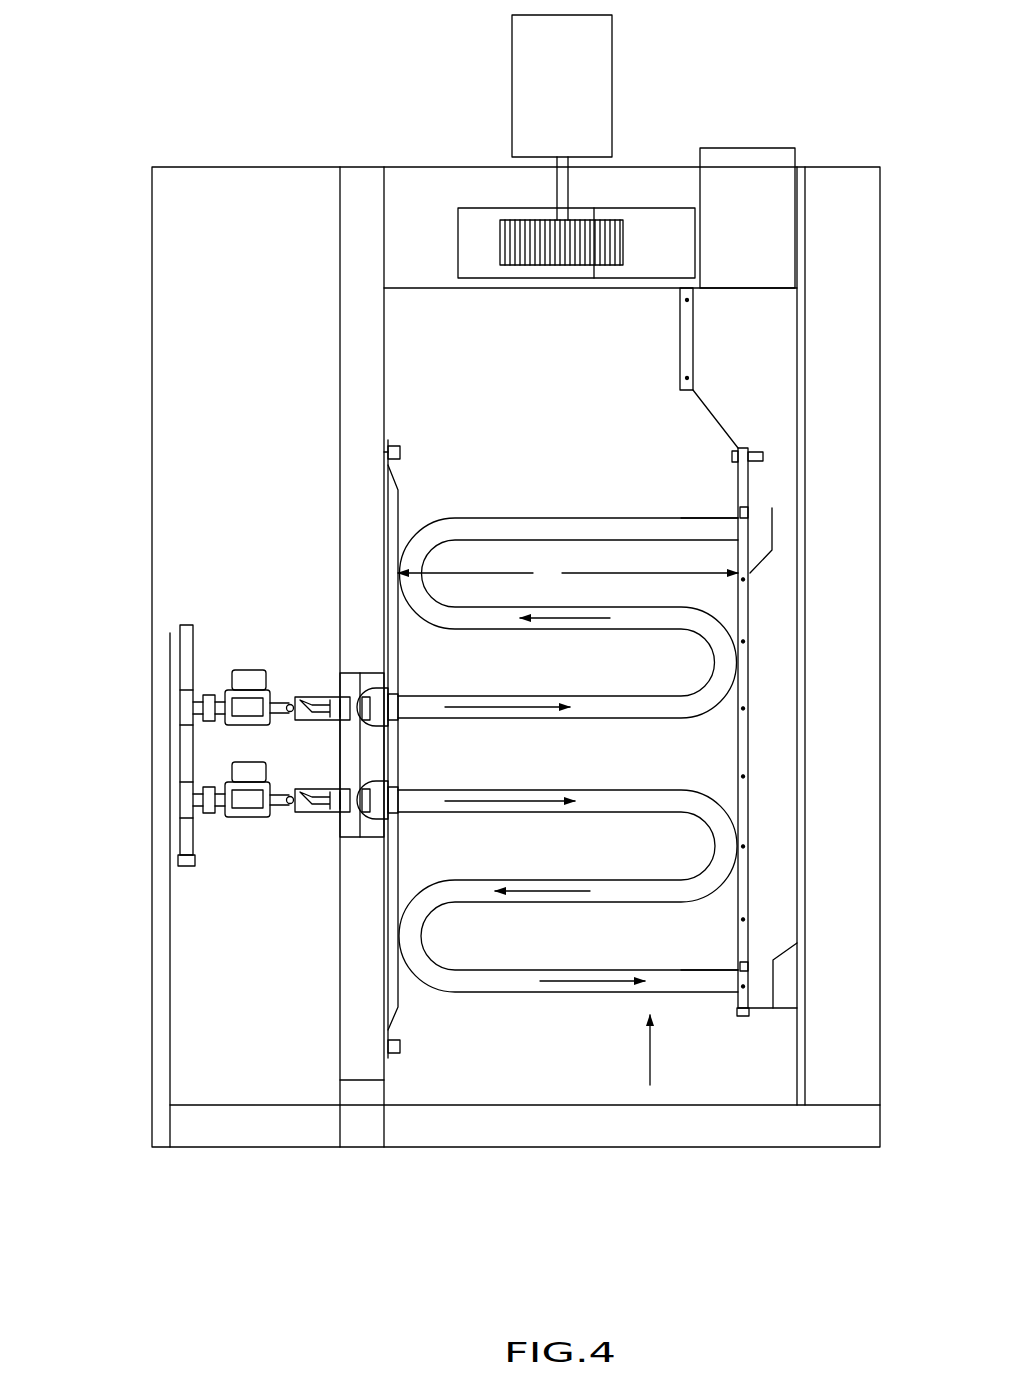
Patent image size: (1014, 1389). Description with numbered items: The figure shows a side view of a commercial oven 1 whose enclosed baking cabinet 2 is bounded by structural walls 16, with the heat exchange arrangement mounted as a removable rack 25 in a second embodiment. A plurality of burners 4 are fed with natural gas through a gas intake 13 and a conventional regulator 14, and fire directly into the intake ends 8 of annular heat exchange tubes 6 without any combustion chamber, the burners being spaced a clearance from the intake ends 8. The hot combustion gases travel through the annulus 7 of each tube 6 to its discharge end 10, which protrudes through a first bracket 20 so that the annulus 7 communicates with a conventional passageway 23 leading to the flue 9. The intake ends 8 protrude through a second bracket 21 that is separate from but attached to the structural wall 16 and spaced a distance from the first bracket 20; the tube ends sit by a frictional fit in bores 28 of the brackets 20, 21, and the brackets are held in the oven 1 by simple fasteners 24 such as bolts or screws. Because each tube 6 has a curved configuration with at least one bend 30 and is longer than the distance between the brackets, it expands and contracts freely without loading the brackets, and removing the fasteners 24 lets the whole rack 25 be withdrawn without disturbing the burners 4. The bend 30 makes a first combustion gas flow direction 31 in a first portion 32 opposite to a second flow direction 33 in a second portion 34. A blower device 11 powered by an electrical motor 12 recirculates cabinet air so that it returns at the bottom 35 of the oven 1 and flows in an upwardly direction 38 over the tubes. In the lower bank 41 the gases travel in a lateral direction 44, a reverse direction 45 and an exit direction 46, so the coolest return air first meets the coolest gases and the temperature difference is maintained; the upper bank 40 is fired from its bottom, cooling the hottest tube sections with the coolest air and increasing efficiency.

The oven 1 is at (417, 158).
The baking cabinet 2 is at (842, 150).
The burners 4 is at (320, 697).
The heat exchange tubes 6 is at (555, 516).
The annulus 7 is at (775, 520).
The intake ends 8 is at (396, 728).
The flue 9 is at (753, 172).
The discharge ends 10 is at (700, 515).
The blower device 11 is at (458, 245).
The electrical motor 12 is at (590, 78).
The gas intake 13 is at (186, 625).
The regulator 14 is at (245, 670).
The structural walls 16 is at (338, 350).
The first bracket 20 is at (736, 470).
The second bracket 21 is at (400, 510).
The passageway 23 is at (755, 355).
The fasteners 24 is at (400, 450).
The rack 25 is at (752, 683).
The bores 28 is at (750, 505).
The bend 30 is at (700, 660).
The first combustion gas flow direction 31 is at (500, 705).
The first portion 32 is at (445, 720).
The second combustion gas flow direction 33 is at (568, 612).
The second portion 34 is at (535, 631).
The bottom 35 is at (550, 1075).
The upwardly direction 38 is at (648, 1082).
The upper bank 40 is at (642, 732).
The lower bank 41 is at (515, 1000).
The lateral direction 44 is at (505, 810).
The reverse direction 45 is at (540, 901).
The exit direction 46 is at (580, 992).